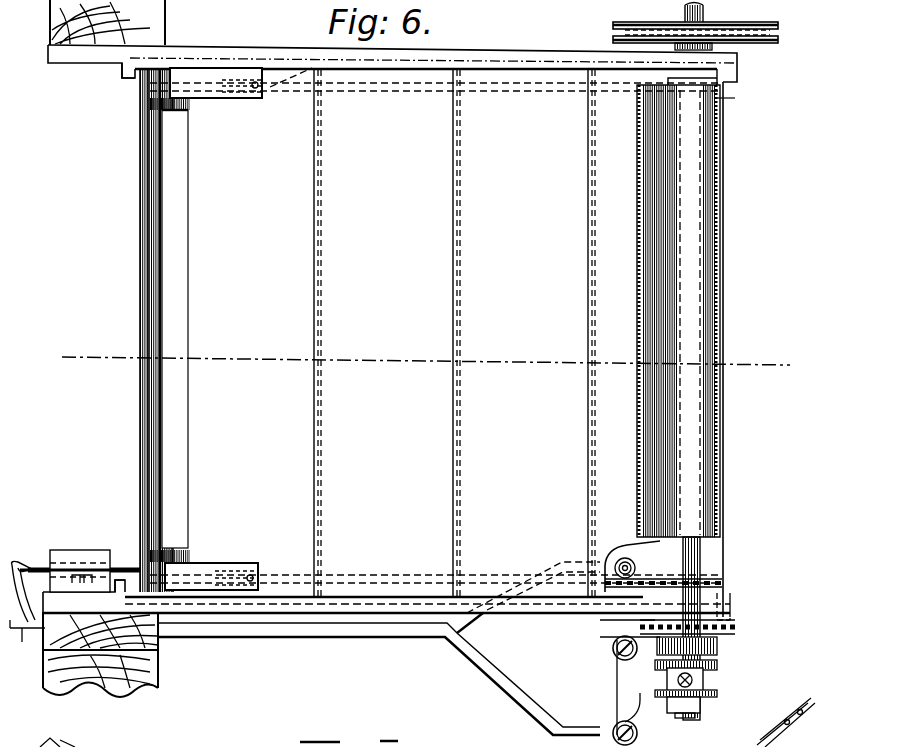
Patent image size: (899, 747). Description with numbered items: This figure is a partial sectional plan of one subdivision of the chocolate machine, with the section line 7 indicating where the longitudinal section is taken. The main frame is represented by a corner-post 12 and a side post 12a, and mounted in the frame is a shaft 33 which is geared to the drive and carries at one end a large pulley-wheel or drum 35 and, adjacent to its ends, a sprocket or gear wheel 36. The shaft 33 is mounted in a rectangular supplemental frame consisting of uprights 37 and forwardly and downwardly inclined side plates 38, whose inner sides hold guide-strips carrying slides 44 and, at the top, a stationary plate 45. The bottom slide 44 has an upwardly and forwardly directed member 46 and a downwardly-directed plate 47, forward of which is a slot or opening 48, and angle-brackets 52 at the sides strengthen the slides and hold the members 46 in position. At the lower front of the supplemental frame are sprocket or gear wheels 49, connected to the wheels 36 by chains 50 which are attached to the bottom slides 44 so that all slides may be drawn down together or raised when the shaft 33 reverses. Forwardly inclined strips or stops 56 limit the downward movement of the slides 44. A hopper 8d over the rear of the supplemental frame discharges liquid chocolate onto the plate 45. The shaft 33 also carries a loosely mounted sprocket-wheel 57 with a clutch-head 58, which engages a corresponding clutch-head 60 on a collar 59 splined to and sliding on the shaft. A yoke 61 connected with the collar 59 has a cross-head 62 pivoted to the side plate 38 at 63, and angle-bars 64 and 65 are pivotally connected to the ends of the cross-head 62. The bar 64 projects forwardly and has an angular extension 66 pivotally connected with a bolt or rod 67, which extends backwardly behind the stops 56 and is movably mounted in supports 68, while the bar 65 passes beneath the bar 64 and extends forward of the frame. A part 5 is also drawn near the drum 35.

The drive disc 5 is at (776, 33).
The section line 7 7 is at (415, 364).
The hopper 8d is at (641, 172).
The corner-post 12 is at (145, 672).
The side post 12a is at (166, 30).
The shaft 33 is at (705, 16).
The pulley-wheel or drum 35 is at (762, 44).
The sprocket or gear wheel 36 is at (716, 98).
The upright 37 is at (725, 246).
The side plate 38 is at (518, 50).
The slide 44 is at (424, 333).
The stationary plate 45 is at (637, 433).
The upwardly and forwardly directed member 46 is at (140, 270).
The downwardly-directed plate 47 is at (162, 318).
The slot or opening 48 is at (182, 388).
The sprocket or gear wheel 49 is at (262, 99).
The chain 50 is at (396, 94).
The angle-bracket 52 is at (200, 93).
The strip or stop 56 is at (126, 80).
The sprocket-wheel 57 is at (730, 633).
The clutch-head 58 is at (708, 645).
The collar 59 is at (717, 694).
The clutch-head 60 is at (705, 662).
The yoke 61 is at (667, 680).
The cross-head 62 is at (612, 700).
The pivot 63 is at (603, 640).
The angle-bar 64 is at (300, 634).
The angle-bar 65 is at (485, 636).
The angular extension 66 is at (35, 565).
The bolt or rod 67 is at (58, 548).
The support 68 is at (82, 548).